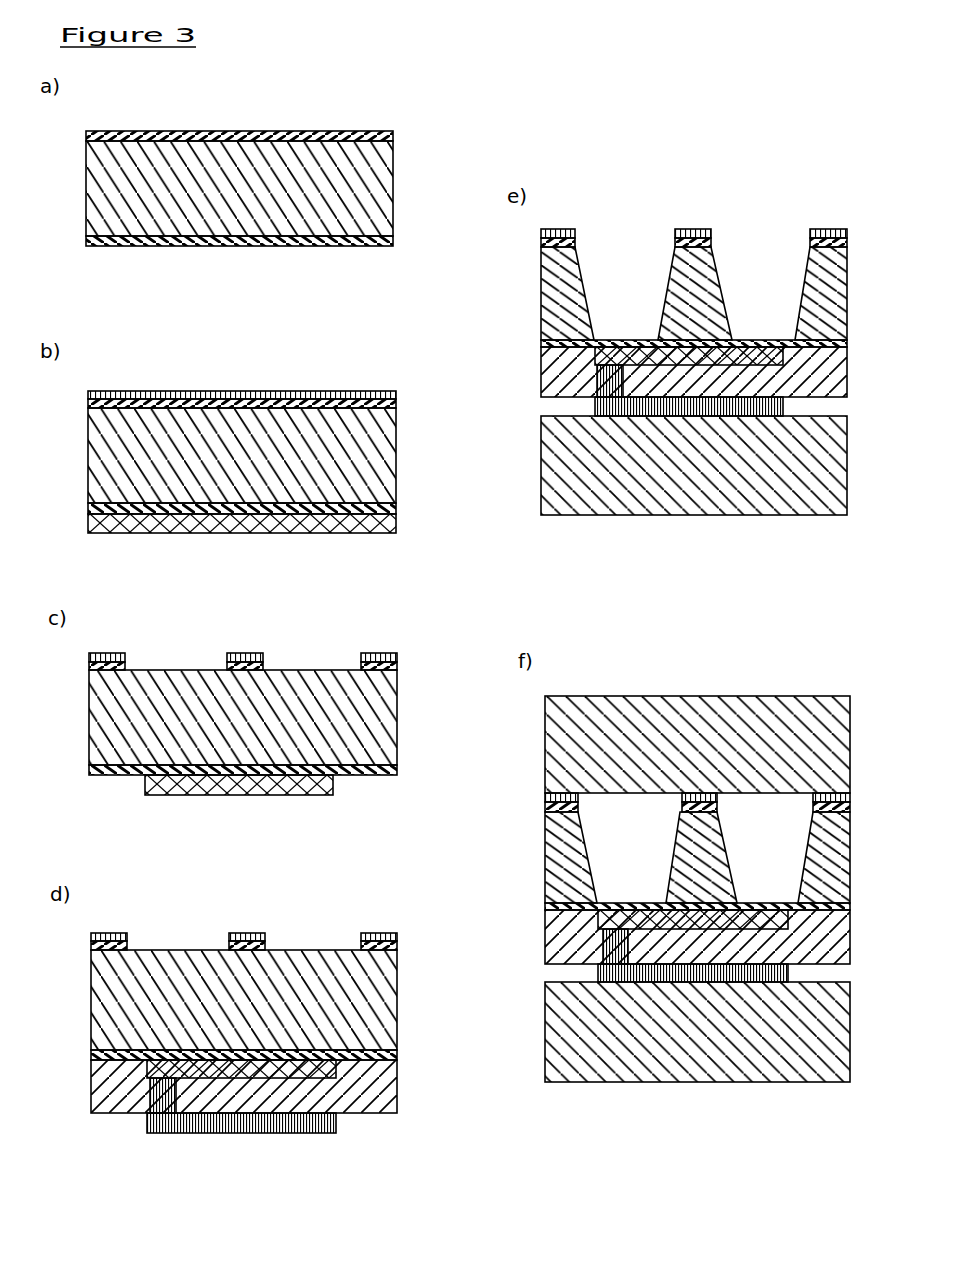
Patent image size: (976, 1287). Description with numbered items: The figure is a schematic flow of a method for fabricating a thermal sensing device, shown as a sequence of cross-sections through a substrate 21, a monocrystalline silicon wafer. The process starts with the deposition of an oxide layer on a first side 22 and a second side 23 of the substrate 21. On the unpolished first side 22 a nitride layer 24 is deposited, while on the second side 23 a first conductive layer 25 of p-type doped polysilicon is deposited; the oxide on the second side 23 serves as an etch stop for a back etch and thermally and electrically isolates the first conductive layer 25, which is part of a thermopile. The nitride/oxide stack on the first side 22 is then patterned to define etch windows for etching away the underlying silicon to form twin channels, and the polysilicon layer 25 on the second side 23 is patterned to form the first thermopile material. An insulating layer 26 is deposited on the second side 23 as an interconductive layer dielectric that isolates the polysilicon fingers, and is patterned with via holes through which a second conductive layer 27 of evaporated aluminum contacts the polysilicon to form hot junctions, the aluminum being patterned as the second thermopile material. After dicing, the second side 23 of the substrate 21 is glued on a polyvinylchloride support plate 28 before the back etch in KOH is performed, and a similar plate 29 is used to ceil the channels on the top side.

The substrate 21 is at (130, 206).
The first side 22 is at (86, 136).
The second side 23 is at (86, 242).
The nitride layer 24 is at (385, 393).
The first conductive layer 25 is at (370, 530).
The insulating layer 26 is at (105, 1097).
The second conductive layer 27 is at (160, 1118).
The support plate 28 is at (595, 506).
The similar plate 29 is at (613, 705).